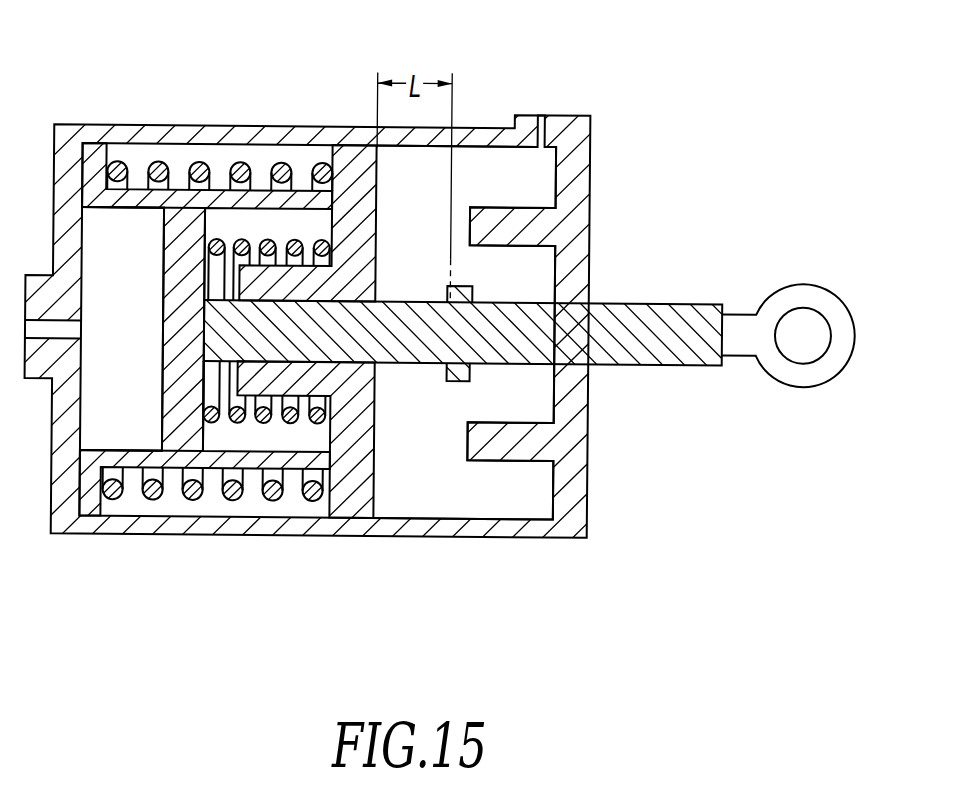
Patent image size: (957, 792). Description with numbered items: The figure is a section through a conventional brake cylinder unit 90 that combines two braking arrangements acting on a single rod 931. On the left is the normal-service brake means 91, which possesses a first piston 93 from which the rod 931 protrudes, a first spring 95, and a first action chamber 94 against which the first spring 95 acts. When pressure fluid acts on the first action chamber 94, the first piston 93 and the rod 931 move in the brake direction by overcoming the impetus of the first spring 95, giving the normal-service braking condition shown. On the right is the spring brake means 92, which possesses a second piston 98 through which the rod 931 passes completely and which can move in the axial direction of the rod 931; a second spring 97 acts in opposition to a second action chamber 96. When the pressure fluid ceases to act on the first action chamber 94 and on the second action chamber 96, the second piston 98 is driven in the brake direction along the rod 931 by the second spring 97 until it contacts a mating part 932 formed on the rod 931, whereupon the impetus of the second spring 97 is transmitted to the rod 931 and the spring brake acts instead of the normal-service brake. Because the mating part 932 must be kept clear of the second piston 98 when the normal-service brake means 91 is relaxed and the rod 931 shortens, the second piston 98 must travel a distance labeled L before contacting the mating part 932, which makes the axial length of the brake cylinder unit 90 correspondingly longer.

The brake cylinder unit 90 is at (627, 127).
The normal-service brake means 91 is at (280, 82).
The spring brake means 92 is at (425, 593).
The first piston 93 is at (187, 219).
The first action chamber 94 is at (128, 228).
The first spring 95 is at (262, 246).
The second action chamber 96 is at (407, 498).
The second spring 97 is at (276, 493).
The second piston 98 is at (343, 499).
The rod 931 is at (650, 304).
The mating part 932 is at (453, 382).